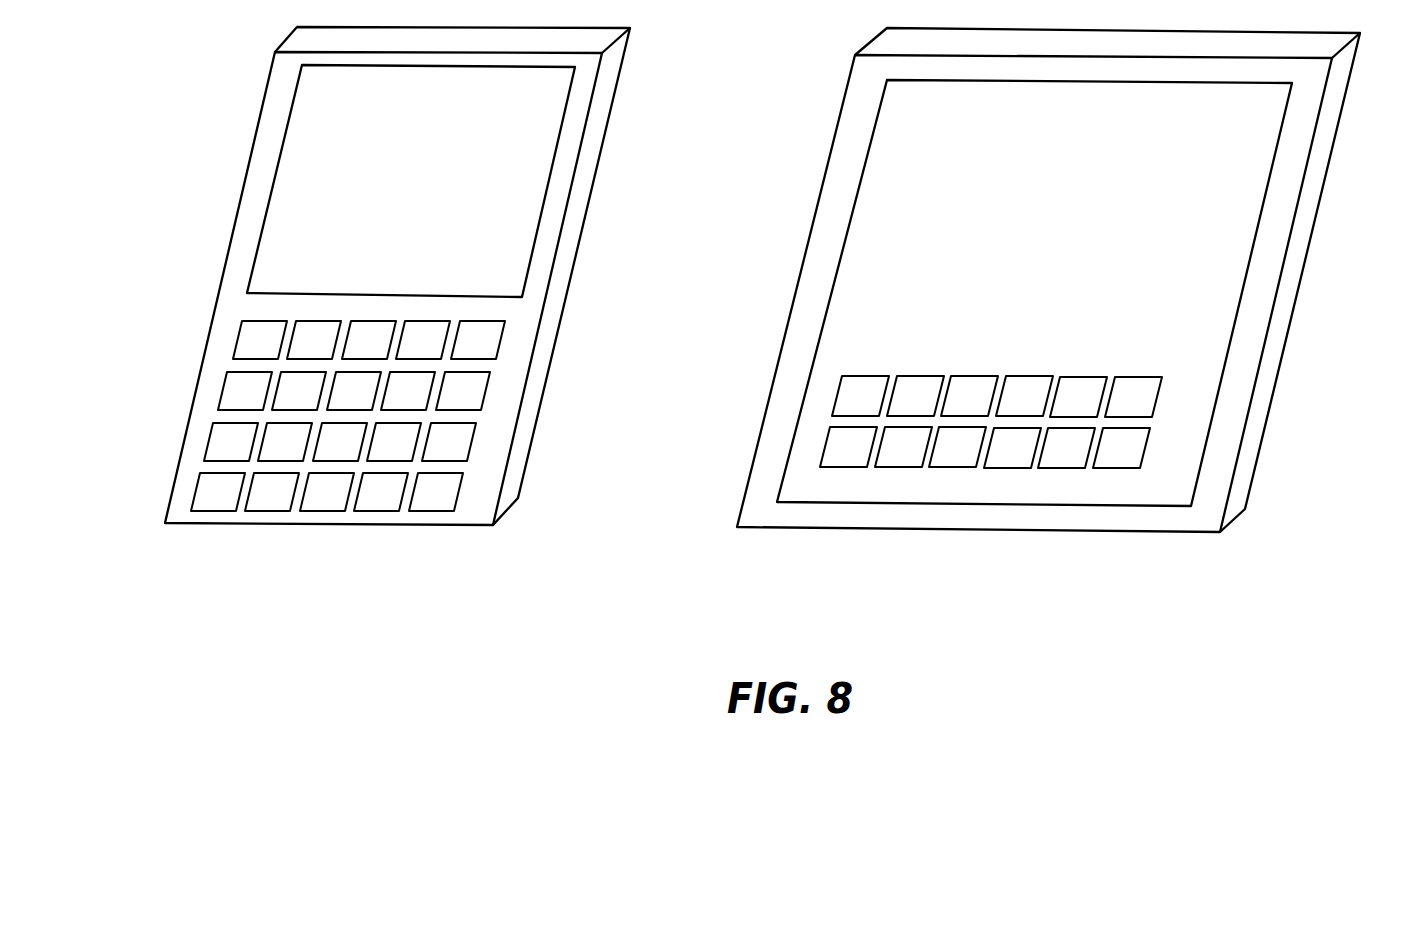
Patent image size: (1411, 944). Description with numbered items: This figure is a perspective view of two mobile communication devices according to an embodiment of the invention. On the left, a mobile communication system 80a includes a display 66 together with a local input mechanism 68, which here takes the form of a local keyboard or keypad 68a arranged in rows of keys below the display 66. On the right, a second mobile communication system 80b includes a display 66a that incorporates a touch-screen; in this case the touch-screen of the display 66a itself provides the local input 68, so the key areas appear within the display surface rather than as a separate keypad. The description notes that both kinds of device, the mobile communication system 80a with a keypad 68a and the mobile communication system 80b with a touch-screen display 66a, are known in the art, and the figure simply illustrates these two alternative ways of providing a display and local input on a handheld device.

The display 66 is at (781, 344).
The display with touch-screen 66a is at (1176, 429).
The local input mechanism 68 is at (676, 459).
The local keyboard or keypad 68a is at (472, 442).
The mobile communication system 80a is at (490, 578).
The mobile communication system 80b is at (1048, 345).